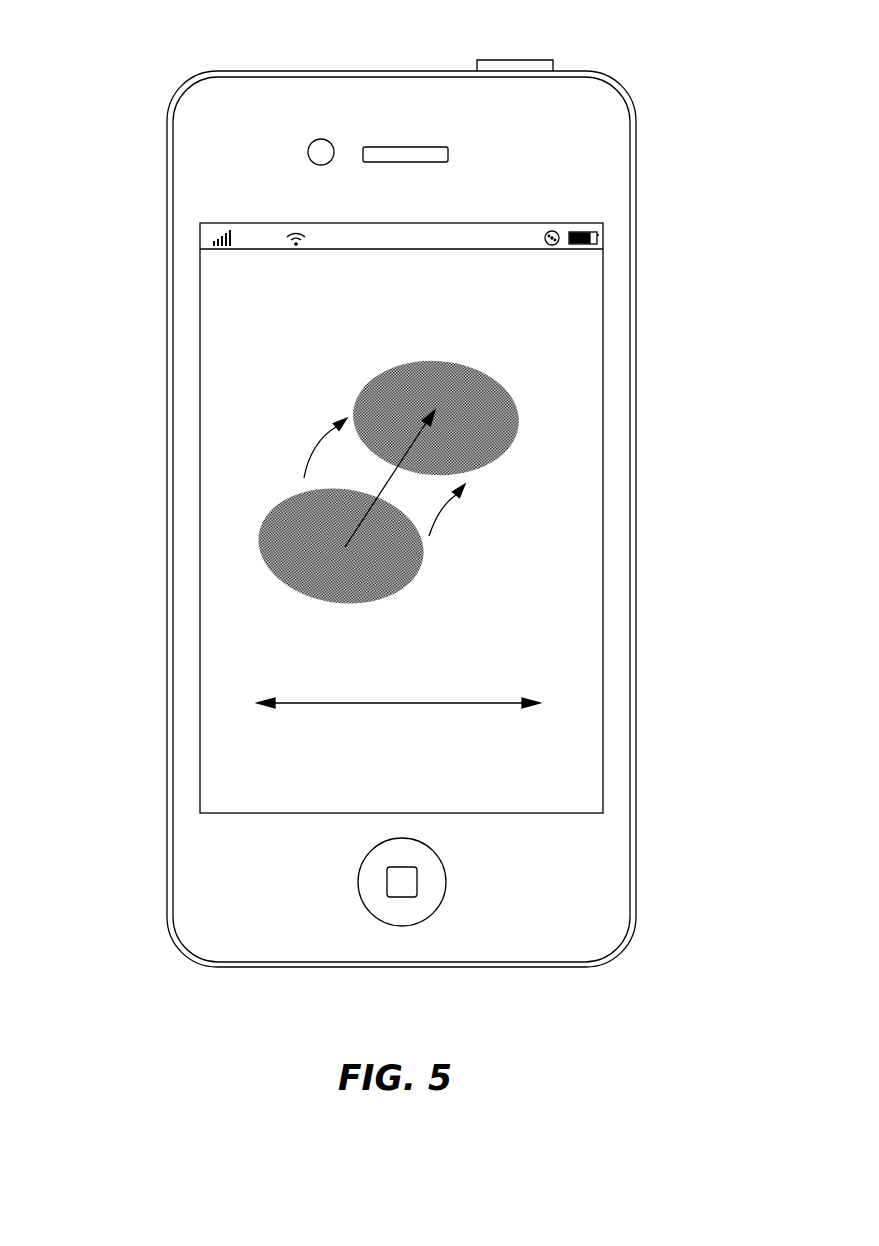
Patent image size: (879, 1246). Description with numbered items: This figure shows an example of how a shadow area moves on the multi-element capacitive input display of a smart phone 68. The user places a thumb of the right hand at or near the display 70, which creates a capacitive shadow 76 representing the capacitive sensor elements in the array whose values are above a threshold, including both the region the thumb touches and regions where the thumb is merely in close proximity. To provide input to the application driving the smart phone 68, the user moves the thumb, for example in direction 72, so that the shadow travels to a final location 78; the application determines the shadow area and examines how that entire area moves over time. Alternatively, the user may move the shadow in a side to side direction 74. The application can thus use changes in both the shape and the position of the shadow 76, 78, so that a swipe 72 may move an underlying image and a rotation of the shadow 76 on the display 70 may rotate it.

The smart phone 68 is at (395, 70).
The display 70 is at (579, 394).
The direction 72 is at (467, 523).
The side to side direction 74 is at (330, 704).
The capacitive shadow 76 is at (406, 583).
The final location 78 is at (515, 428).